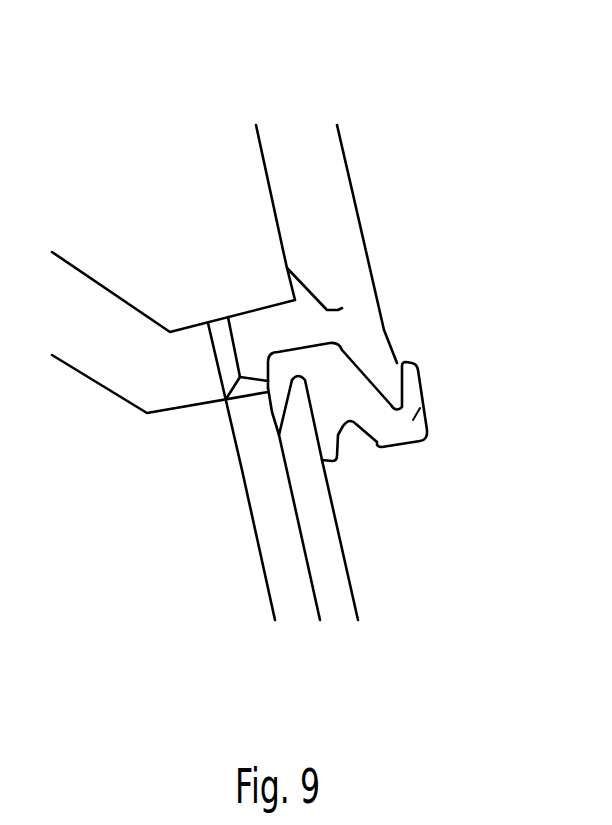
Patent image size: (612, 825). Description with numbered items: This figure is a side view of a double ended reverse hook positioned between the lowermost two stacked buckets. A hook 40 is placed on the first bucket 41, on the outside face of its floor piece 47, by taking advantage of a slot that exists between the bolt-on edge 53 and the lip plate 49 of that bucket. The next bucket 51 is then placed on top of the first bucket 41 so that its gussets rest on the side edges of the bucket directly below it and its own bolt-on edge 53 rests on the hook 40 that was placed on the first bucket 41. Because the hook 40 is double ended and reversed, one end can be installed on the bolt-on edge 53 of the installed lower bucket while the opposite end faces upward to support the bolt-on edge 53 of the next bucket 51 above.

The hook 40 is at (440, 400).
The first bucket 41 is at (160, 449).
The floor piece 47 is at (255, 547).
The lip plate 49 is at (281, 141).
The next bucket 51 is at (197, 264).
The bolt-on edge 53 is at (321, 142).